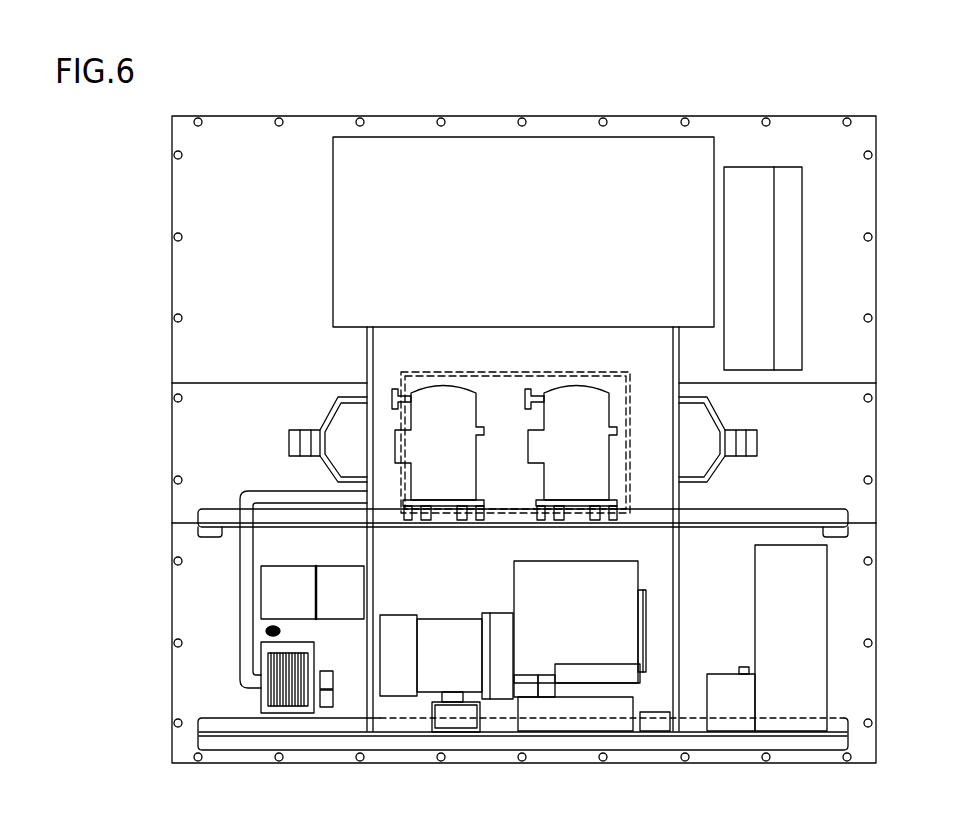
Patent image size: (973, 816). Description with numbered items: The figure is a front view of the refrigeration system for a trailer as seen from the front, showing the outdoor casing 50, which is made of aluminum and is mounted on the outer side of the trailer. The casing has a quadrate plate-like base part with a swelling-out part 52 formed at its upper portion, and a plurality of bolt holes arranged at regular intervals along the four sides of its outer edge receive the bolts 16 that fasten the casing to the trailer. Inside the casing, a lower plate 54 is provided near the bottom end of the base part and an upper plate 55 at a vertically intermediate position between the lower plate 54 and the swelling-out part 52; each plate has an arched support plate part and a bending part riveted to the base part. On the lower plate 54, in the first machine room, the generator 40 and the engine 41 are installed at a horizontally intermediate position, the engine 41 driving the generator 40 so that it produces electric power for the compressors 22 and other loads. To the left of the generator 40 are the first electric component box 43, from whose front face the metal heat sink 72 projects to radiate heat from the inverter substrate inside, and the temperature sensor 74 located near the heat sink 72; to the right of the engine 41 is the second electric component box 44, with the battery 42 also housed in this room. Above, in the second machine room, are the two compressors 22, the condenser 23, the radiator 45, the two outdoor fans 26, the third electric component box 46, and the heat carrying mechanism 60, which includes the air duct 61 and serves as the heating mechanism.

The bolts 16 is at (360, 122).
The compressors 22 is at (504, 424).
The condenser 23 is at (428, 371).
The outdoor fans 26 is at (292, 441).
The generator 40 is at (441, 620).
The engine 41 is at (589, 629).
The battery 42 is at (732, 700).
The first electric component box 43 is at (309, 718).
The second electric component box 44 is at (795, 700).
The radiator 45 is at (585, 378).
The third electric component box 46 is at (754, 173).
The outdoor casing 50 is at (168, 187).
The swelling-out part 52 is at (487, 155).
The lower plate 54 is at (200, 733).
The upper plate 55 is at (200, 521).
The heat carrying mechanism 60 is at (273, 617).
The air duct 61 is at (266, 483).
The heat sink 72 is at (303, 656).
The temperature sensor 74 is at (264, 631).